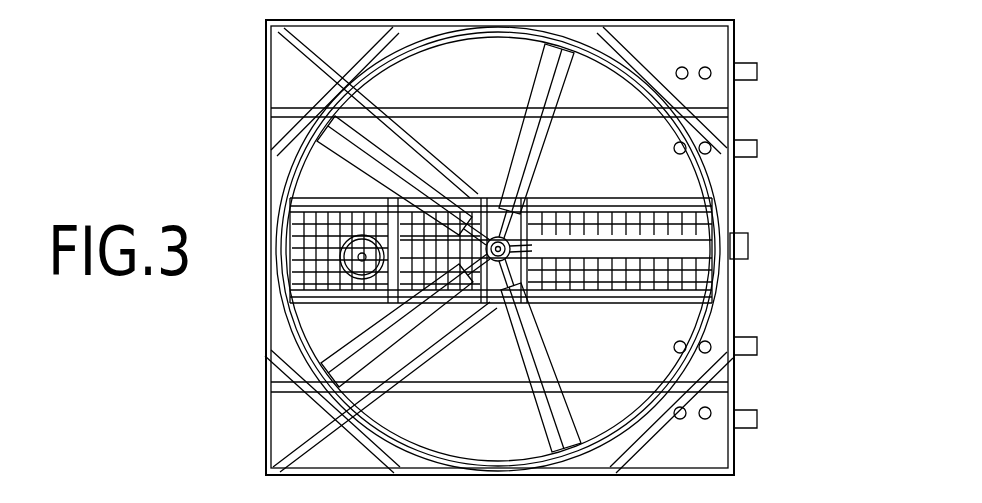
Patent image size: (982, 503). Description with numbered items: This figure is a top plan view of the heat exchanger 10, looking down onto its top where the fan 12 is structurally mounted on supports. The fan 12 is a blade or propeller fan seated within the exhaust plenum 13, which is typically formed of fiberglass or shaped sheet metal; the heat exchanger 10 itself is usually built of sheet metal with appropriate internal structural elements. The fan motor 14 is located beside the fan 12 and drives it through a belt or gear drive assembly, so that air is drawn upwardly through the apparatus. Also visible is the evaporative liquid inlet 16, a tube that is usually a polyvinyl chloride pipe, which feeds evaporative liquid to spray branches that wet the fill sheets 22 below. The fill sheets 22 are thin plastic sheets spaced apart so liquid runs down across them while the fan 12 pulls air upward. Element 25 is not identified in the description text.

The heat exchanger 10 is at (748, 383).
The fan 12 is at (693, 231).
The exhaust plenum 13 is at (688, 135).
The fan motor 14 is at (360, 215).
The evaporative liquid inlet 16 is at (748, 246).
The fill sheets 22 is at (648, 330).
The belt guard 25 is at (676, 208).